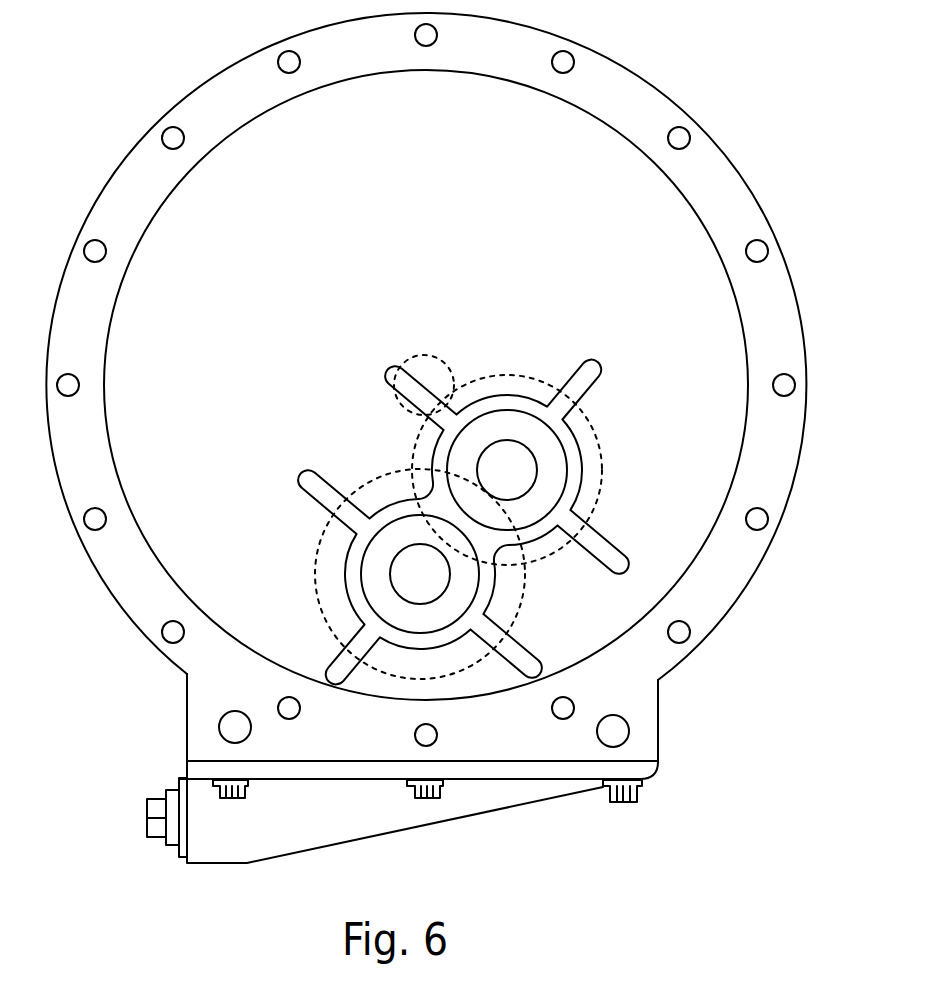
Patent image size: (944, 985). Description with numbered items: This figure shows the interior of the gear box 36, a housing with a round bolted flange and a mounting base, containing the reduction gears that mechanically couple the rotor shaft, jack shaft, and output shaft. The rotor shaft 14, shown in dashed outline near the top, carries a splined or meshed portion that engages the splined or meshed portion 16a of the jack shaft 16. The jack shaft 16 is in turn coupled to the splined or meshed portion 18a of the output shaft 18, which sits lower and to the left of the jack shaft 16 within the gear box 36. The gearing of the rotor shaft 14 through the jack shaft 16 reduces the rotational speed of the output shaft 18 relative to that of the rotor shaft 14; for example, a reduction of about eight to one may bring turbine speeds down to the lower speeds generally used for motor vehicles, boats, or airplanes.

The rotor shaft 14 is at (430, 378).
The jack shaft 16 is at (513, 468).
The splined or meshed portion 16a is at (513, 383).
The output shaft 18 is at (427, 577).
The splined or meshed portion 18a is at (317, 558).
The gear box 36 is at (769, 480).